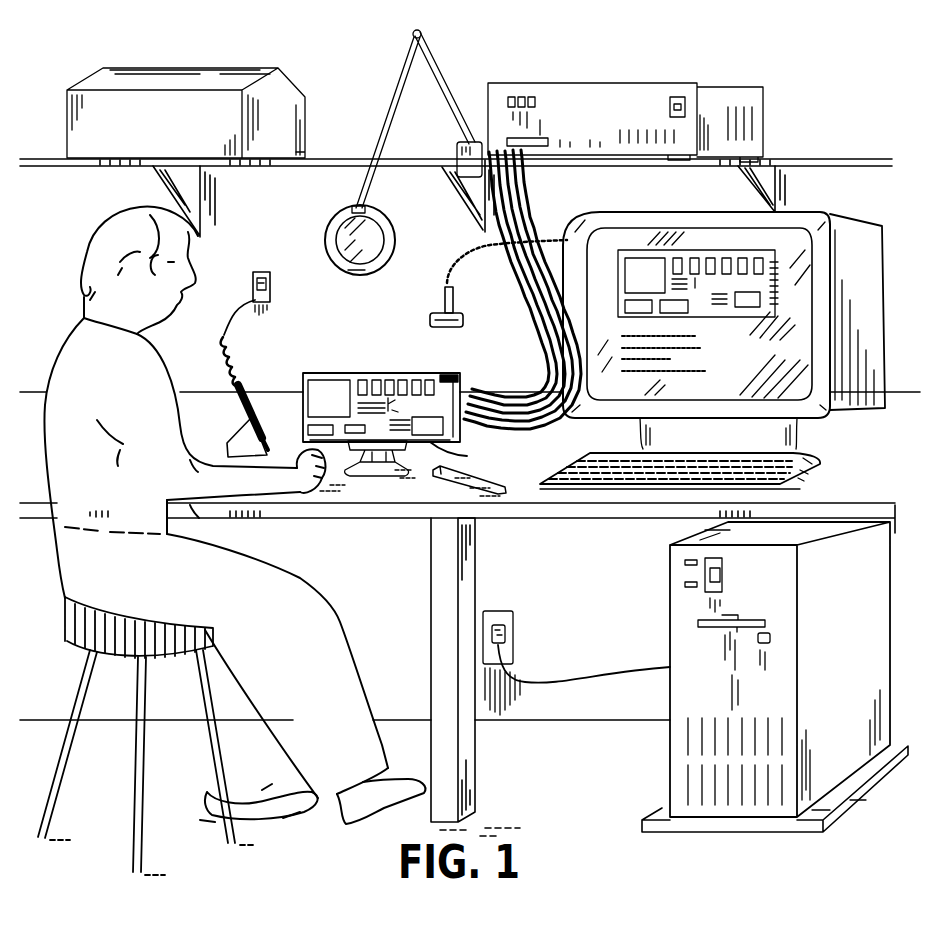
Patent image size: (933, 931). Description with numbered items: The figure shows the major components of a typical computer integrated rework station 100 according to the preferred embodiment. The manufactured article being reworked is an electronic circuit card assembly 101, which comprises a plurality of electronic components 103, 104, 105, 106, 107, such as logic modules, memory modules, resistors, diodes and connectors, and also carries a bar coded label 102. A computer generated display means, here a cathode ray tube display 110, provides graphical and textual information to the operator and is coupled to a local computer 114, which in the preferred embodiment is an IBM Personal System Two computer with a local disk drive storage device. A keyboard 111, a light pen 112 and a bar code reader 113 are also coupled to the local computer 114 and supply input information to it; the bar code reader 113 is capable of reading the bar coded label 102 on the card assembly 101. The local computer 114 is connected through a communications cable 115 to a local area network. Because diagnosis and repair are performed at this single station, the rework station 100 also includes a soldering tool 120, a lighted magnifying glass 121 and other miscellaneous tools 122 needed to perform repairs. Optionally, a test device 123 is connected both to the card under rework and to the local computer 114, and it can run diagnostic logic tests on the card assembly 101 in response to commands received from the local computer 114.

The rework station 100 is at (472, 96).
The electronic circuit card assembly 101 is at (380, 372).
The bar coded label 102 is at (462, 377).
The electronic component 103 is at (375, 361).
The electronic component 104 is at (327, 437).
The electronic component 105 is at (468, 458).
The electronic component 106 is at (412, 379).
The electronic component 107 is at (392, 396).
The cathode ray tube display 110 is at (672, 212).
The keyboard 111 is at (820, 464).
The light pen 112 is at (503, 489).
The bar code reader 113 is at (435, 312).
The local computer 114 is at (670, 588).
The communications cable 115 is at (562, 677).
The soldering tool 120 is at (258, 397).
The lighted magnifying glass 121 is at (338, 212).
The miscellaneous tools 122 is at (202, 67).
The test device 123 is at (663, 82).